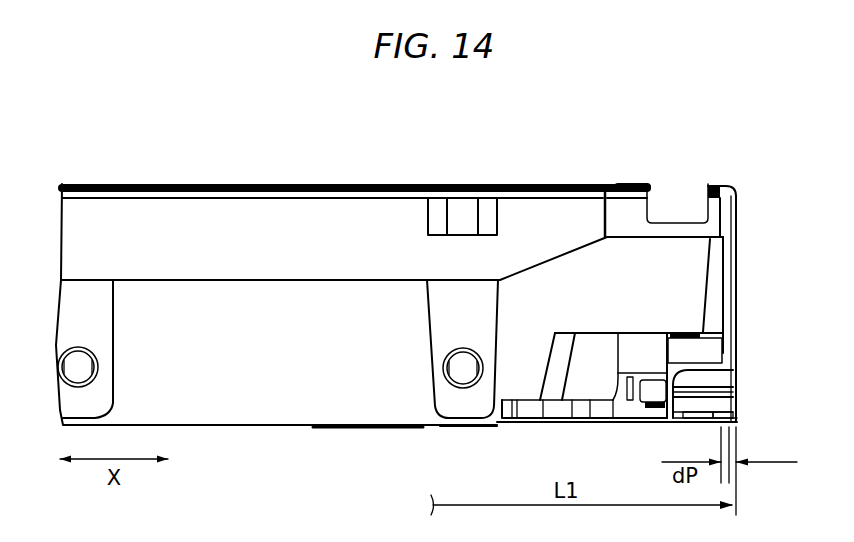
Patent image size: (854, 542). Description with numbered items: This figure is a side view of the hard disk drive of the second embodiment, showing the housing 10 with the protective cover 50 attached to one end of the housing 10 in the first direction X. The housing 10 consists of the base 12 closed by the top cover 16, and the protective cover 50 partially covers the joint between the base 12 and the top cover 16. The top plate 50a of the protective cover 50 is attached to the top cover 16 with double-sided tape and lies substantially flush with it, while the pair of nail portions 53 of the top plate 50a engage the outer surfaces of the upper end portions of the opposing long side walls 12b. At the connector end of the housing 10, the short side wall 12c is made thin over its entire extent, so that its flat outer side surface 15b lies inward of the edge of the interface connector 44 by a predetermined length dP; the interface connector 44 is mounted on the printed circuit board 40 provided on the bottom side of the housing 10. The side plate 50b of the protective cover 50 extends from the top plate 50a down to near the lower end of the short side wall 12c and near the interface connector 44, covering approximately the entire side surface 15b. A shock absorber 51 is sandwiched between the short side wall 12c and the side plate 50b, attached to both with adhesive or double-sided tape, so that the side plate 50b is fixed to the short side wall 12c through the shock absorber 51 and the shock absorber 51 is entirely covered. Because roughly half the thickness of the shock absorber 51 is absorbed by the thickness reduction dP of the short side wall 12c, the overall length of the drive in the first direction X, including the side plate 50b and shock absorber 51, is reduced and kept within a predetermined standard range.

The housing 10 is at (322, 182).
The base 12 is at (237, 395).
The long side wall 12b is at (372, 370).
The short side wall 12c is at (716, 310).
The side surface 15b is at (724, 353).
The top cover 16 is at (258, 184).
The printed circuit board 40 is at (618, 428).
The interface connector 44 is at (722, 402).
The protective cover 50 is at (734, 167).
The top plate 50a is at (632, 184).
The side plate 50b is at (737, 220).
The shock absorber 51 is at (730, 302).
The nail portion 53 is at (688, 198).